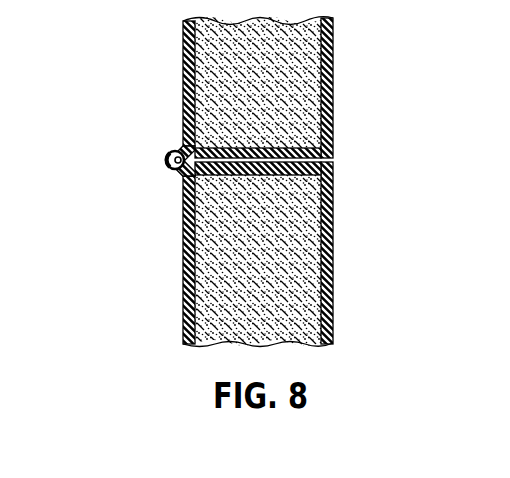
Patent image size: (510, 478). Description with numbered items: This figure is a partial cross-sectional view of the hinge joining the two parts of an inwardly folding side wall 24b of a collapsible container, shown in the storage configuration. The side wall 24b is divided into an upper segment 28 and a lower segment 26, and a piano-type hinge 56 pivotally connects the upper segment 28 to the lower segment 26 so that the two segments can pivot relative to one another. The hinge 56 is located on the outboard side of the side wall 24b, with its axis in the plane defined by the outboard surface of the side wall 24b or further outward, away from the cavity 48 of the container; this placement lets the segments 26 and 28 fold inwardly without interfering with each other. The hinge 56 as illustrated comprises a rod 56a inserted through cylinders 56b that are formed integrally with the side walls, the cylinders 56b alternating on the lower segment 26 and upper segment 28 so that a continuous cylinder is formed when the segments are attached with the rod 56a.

The inwardly folding side wall 24b is at (158, 51).
The upper segment 28 is at (333, 86).
The lower segment 26 is at (333, 258).
The cavity 48 is at (390, 186).
The piano-type hinge 56 is at (131, 155).
The rod 56a is at (172, 165).
The cylinders 56b is at (170, 158).